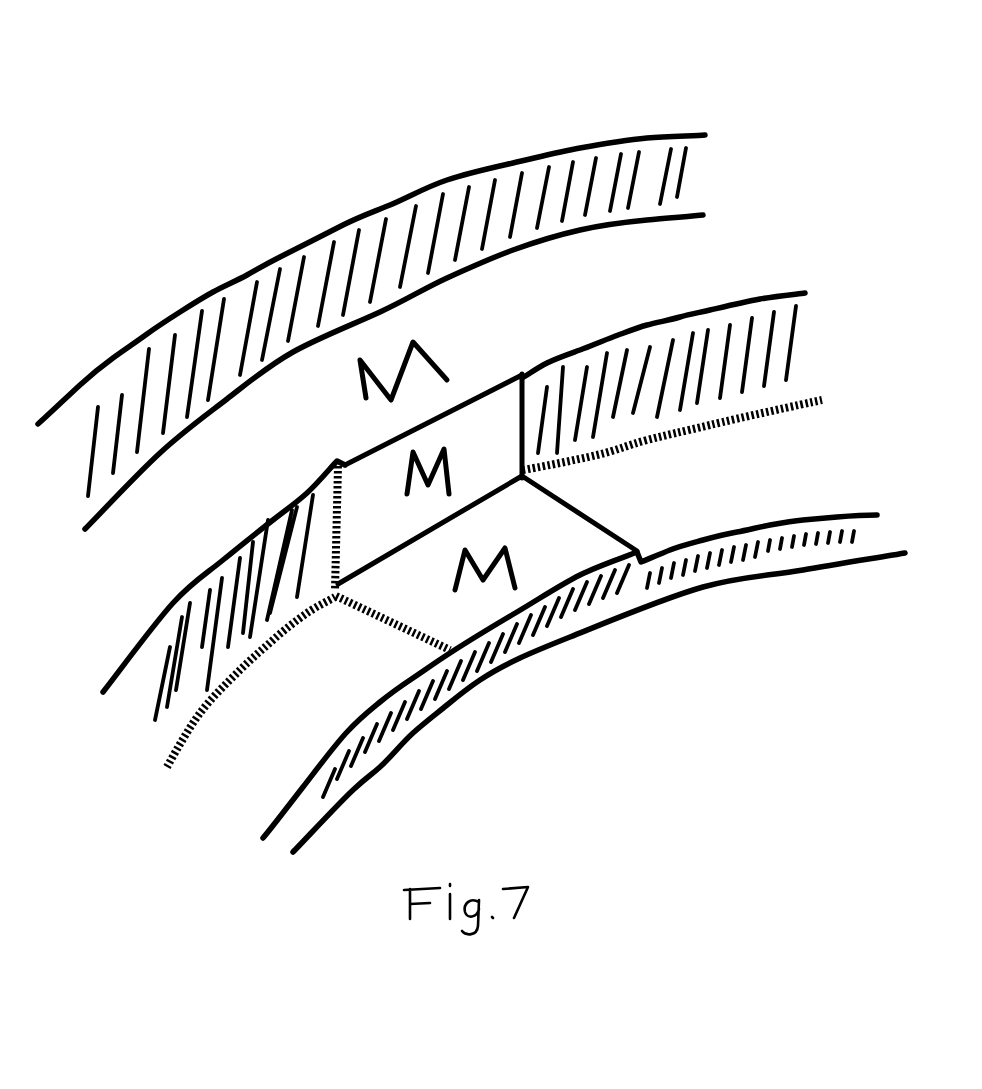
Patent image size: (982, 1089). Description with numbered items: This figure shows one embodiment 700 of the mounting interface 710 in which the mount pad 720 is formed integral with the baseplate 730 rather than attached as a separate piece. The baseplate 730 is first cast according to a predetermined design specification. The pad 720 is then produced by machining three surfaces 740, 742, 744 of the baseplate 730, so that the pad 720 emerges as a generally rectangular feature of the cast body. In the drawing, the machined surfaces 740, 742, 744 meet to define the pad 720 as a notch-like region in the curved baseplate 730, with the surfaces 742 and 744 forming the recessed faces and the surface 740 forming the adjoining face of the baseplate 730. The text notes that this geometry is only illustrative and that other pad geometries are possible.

The embodiment of the mounting interface 700 is at (468, 97).
The mounting interface 710 is at (660, 640).
The mount pad 720 is at (533, 510).
The baseplate 730 is at (364, 240).
The surface 740 is at (497, 335).
The surface 742 is at (390, 472).
The surface 744 is at (410, 603).